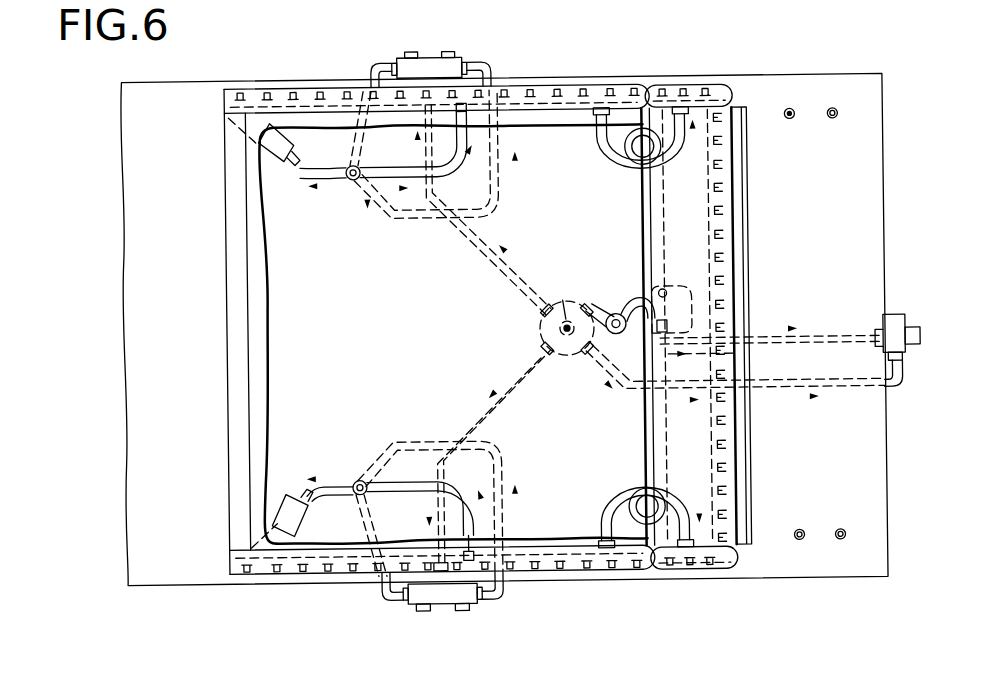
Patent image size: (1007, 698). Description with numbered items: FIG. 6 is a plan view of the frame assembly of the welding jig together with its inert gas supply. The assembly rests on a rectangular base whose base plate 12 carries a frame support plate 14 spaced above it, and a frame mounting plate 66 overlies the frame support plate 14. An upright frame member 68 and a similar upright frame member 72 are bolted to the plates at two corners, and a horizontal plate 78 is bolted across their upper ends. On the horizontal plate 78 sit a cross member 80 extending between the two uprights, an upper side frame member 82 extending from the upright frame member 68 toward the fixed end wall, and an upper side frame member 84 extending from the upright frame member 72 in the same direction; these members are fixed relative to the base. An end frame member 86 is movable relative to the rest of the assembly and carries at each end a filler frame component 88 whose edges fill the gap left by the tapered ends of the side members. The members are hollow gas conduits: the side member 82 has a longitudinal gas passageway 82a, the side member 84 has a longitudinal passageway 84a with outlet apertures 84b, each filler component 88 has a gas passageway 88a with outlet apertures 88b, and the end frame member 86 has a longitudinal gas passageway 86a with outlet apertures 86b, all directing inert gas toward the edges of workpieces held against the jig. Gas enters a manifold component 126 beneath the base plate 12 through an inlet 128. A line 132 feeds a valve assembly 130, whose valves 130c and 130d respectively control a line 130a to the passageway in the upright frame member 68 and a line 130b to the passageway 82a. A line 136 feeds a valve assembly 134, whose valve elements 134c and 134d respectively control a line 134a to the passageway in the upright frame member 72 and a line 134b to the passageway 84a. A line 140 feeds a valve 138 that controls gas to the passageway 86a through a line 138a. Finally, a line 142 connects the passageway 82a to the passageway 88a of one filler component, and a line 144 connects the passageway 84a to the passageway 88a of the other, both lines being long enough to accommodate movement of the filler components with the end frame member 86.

The base plate 12 is at (866, 200).
The frame support plate 14 is at (743, 470).
The frame mounting plate 66 is at (405, 309).
The upright frame member 68 is at (278, 148).
The upright frame member 72 is at (283, 512).
The horizontal plate 78 is at (380, 128).
The cross member 80 is at (238, 212).
The upper side frame member 82 is at (657, 85).
The longitudinal gas passageway 82a is at (548, 82).
The upper side frame member 84 is at (290, 575).
The longitudinal passageway 84a is at (550, 572).
The outlet apertures 84b is at (350, 572).
The end frame member 86 is at (697, 200).
The longitudinal gas passageway 86a is at (737, 227).
The outlet apertures 86b is at (727, 238).
The filler frame component 88 is at (683, 86).
The gas passageway 88a is at (687, 78).
The outlet apertures 88b is at (708, 90).
The manifold component 126 is at (560, 295).
The inlet 128 is at (572, 302).
The valve assembly 130 is at (447, 37).
The line 130a is at (356, 140).
The line 130b is at (513, 132).
The valve 130c is at (405, 52).
The valve 130d is at (456, 52).
The line 132 is at (487, 230).
The valve assembly 134 is at (447, 605).
The line 134a is at (347, 468).
The line 134b is at (480, 455).
The valve element 134c is at (420, 611).
The valve element 134d is at (462, 611).
The line 136 is at (480, 412).
The valve 138 is at (890, 318).
The line 138a is at (655, 272).
The line 140 is at (630, 403).
The line 142 is at (637, 173).
The line 144 is at (633, 470).